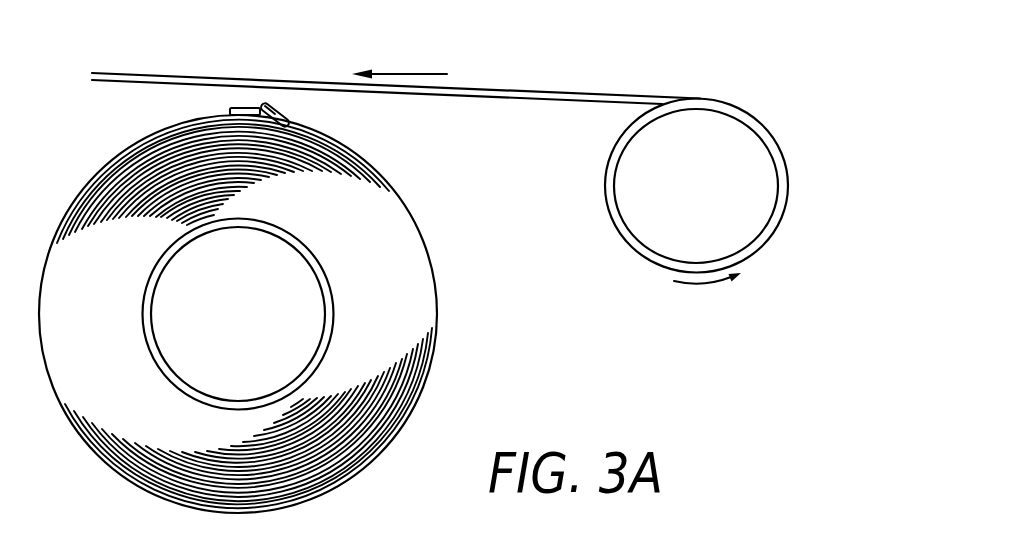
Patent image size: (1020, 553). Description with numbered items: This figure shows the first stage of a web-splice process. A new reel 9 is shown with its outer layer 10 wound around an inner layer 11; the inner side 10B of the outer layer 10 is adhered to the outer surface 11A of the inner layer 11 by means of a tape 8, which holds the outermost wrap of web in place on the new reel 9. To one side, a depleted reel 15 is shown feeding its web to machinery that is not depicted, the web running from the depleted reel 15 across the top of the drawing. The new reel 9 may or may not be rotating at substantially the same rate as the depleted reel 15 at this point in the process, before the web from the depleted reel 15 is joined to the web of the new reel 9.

The tape 8 is at (247, 108).
The new reel 9 is at (108, 467).
The outer layer 10 is at (296, 119).
The inner side 10B is at (282, 107).
The inner layer 11 is at (110, 163).
The outer surface 11A is at (150, 137).
The depleted reel 15 is at (628, 243).